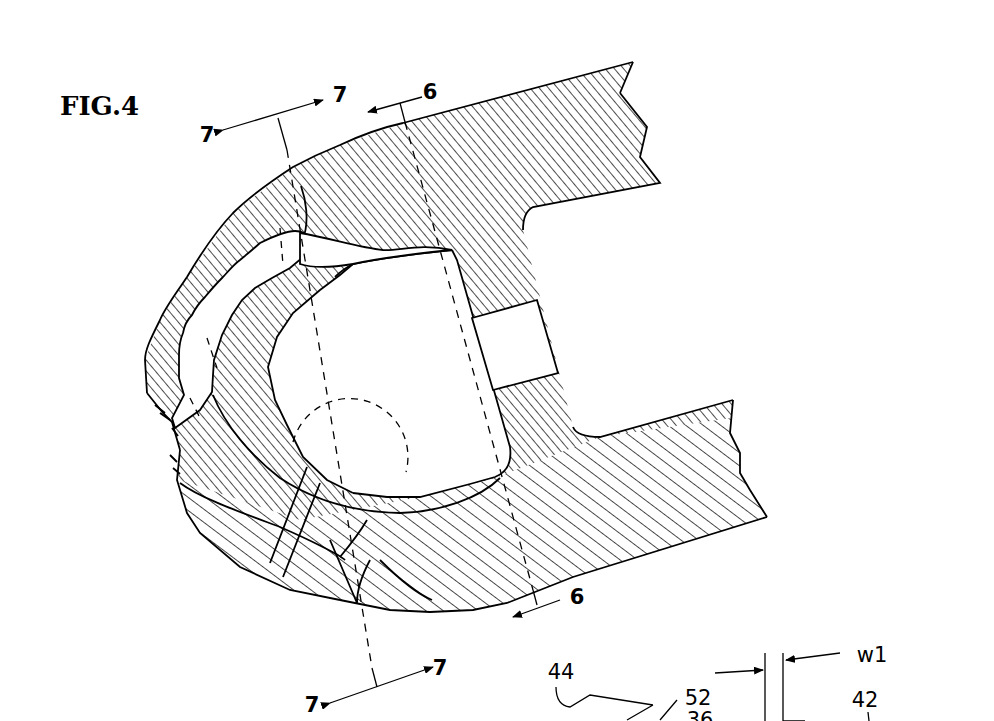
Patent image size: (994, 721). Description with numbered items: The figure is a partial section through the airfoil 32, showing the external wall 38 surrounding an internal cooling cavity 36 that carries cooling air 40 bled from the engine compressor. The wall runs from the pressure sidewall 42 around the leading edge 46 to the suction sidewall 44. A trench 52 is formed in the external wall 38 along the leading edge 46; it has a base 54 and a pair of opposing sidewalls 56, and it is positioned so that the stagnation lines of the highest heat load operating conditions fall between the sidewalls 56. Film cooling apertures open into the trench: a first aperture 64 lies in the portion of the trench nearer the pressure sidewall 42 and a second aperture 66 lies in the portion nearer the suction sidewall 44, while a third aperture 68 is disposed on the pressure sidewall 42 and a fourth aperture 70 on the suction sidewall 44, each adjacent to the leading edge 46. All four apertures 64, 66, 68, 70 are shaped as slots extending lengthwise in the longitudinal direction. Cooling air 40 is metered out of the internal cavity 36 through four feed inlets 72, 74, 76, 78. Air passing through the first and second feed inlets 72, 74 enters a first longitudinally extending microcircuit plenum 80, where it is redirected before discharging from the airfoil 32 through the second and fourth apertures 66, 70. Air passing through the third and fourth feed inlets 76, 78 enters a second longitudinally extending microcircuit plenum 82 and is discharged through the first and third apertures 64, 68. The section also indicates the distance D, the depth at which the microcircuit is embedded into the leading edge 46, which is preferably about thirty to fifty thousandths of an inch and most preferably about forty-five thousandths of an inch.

The airfoil 32 is at (620, 127).
The internal cooling cavity 36 is at (417, 383).
The external wall 38 is at (640, 553).
The cooling air 40 is at (495, 367).
The pressure sidewall 42 is at (755, 520).
The suction sidewall 44 is at (603, 70).
The leading edge 46 is at (220, 543).
The trench 52 is at (167, 427).
The base 54 is at (173, 431).
The sidewalls 56 is at (163, 414).
The first aperture 64 is at (173, 470).
The second aperture 66 is at (163, 410).
The third aperture 68 is at (342, 602).
The fourth aperture 70 is at (233, 213).
The first feed inlet 72 is at (287, 393).
The second feed inlet 74 is at (350, 262).
The third feed inlet 76 is at (282, 412).
The fourth feed inlet 78 is at (409, 486).
The first microcircuit plenum 80 is at (306, 268).
The second microcircuit plenum 82 is at (432, 600).
The distance D is at (237, 553).